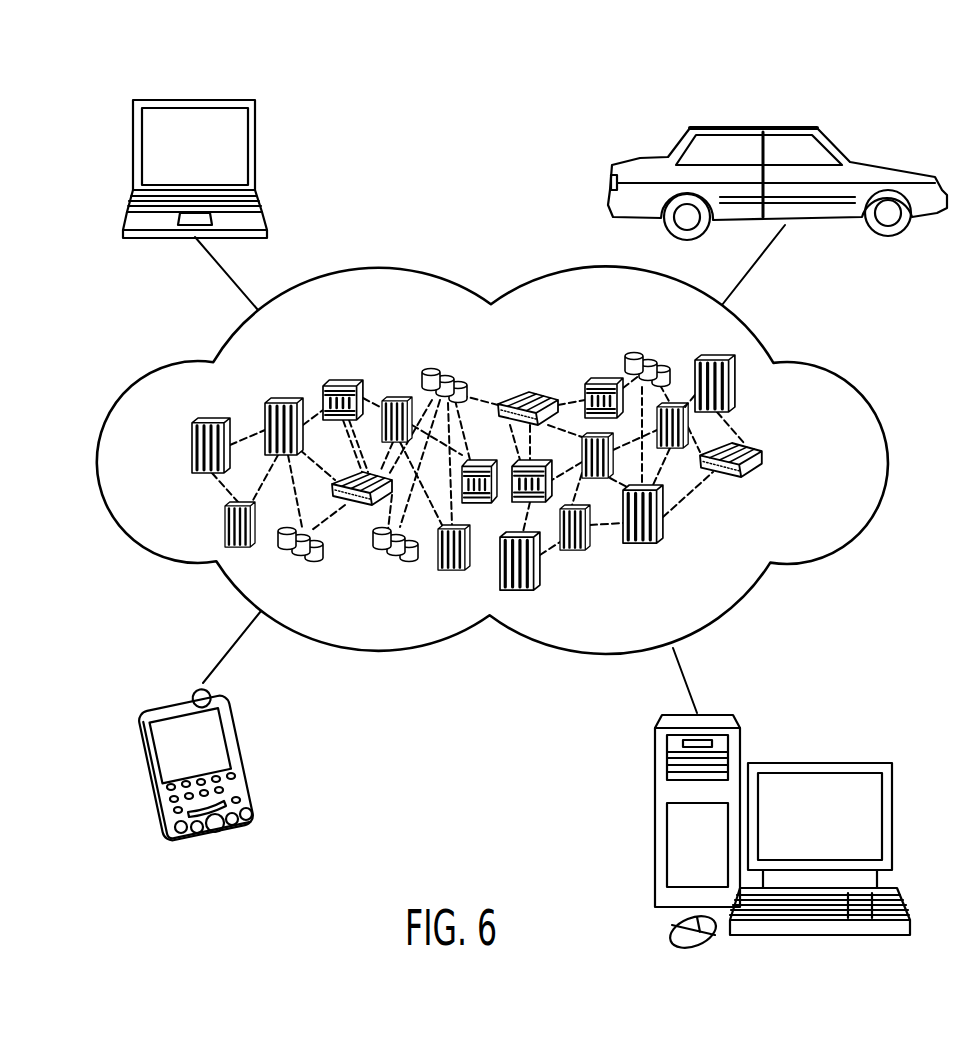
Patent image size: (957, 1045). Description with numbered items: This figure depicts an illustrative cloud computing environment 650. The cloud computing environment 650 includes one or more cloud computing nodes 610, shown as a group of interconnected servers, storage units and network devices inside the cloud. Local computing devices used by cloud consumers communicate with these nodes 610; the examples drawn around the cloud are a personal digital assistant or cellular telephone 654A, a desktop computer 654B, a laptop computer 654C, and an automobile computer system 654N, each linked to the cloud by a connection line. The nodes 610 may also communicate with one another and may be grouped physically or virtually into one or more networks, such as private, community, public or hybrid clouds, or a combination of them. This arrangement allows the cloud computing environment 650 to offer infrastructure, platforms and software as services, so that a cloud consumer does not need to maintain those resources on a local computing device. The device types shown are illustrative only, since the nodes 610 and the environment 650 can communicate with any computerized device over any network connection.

The cloud computing environment 650 is at (790, 362).
The cloud computing nodes 610 is at (768, 459).
The personal digital assistant (PDA) or cellular telephone 654A is at (173, 700).
The desktop computer 654B is at (820, 762).
The laptop computer 654C is at (193, 98).
The automobile computer system 654N is at (756, 127).